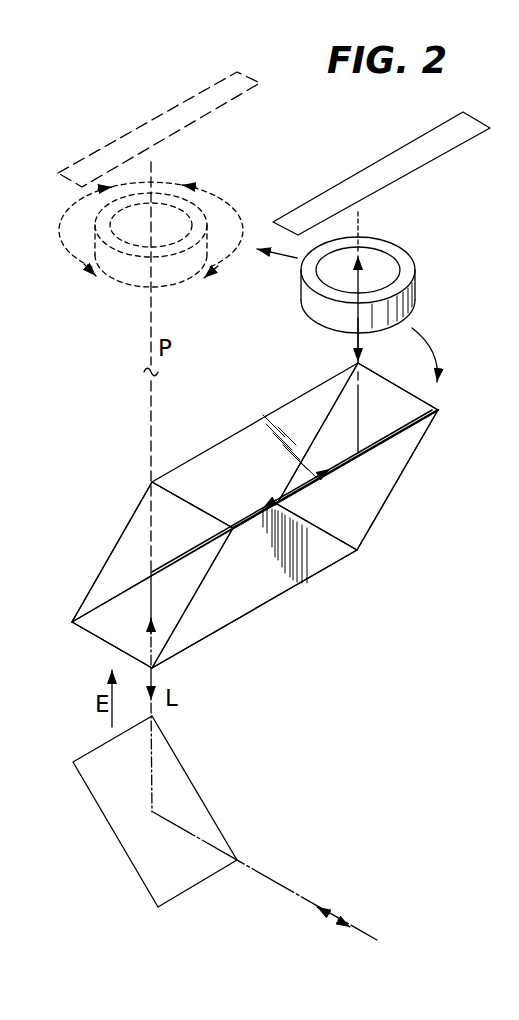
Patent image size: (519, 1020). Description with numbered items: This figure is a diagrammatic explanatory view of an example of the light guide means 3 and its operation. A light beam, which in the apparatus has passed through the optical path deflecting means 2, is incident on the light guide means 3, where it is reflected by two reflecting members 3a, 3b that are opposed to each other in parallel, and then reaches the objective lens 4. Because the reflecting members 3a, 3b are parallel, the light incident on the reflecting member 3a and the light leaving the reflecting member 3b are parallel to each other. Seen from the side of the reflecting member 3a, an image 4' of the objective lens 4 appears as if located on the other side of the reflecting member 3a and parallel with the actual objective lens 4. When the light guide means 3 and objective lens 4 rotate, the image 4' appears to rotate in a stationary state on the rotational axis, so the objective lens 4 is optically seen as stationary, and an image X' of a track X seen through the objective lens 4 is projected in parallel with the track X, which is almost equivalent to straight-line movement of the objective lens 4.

The optical path deflecting means 2 is at (202, 800).
The light guide means 3 is at (262, 612).
The reflecting member 3a is at (125, 547).
The reflecting member 3b is at (363, 513).
The objective lens 4 is at (368, 272).
The image of the objective lens 4' is at (151, 253).
The track X is at (381, 173).
The image of the track X' is at (159, 129).